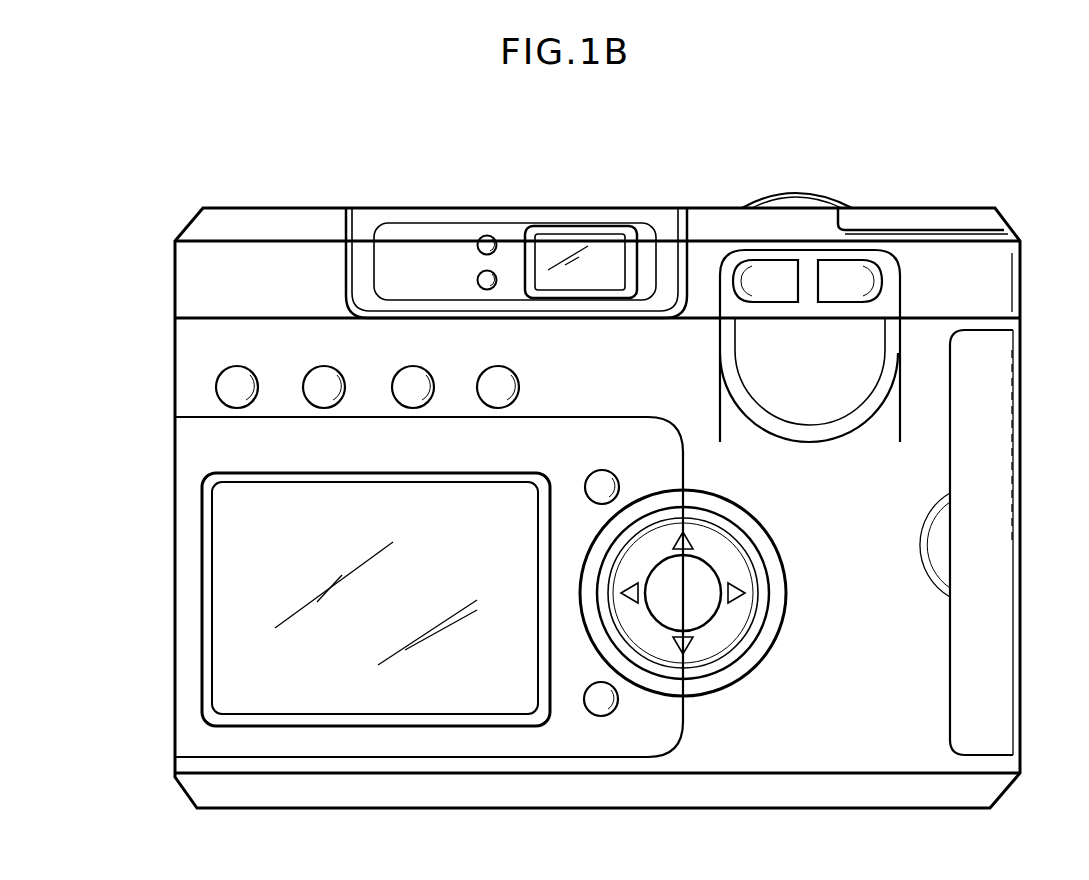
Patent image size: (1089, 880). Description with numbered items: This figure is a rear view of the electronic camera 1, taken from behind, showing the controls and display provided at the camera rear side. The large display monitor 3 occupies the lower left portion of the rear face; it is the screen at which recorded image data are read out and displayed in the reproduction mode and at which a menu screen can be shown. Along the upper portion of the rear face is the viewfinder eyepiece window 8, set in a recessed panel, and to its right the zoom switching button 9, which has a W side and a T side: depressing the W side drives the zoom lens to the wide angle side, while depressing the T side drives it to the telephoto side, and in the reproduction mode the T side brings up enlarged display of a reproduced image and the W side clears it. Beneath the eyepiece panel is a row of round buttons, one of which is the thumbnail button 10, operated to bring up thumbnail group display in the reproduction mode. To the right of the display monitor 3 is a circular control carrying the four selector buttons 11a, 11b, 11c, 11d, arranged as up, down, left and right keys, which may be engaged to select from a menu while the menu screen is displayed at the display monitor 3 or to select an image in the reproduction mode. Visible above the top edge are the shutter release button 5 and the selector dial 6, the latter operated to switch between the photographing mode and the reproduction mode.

The electronic camera 1 is at (152, 590).
The display monitor 3 is at (356, 685).
The shutter release button 5 is at (815, 201).
The selector dial 6 is at (945, 215).
The viewfinder eyepiece window 8 is at (606, 248).
The zoom switching button 9 is at (827, 273).
The thumbnail button 10 is at (493, 378).
The selector button 11a is at (688, 538).
The selector button 11b is at (688, 648).
The selector button 11c is at (628, 595).
The selector button 11d is at (743, 596).